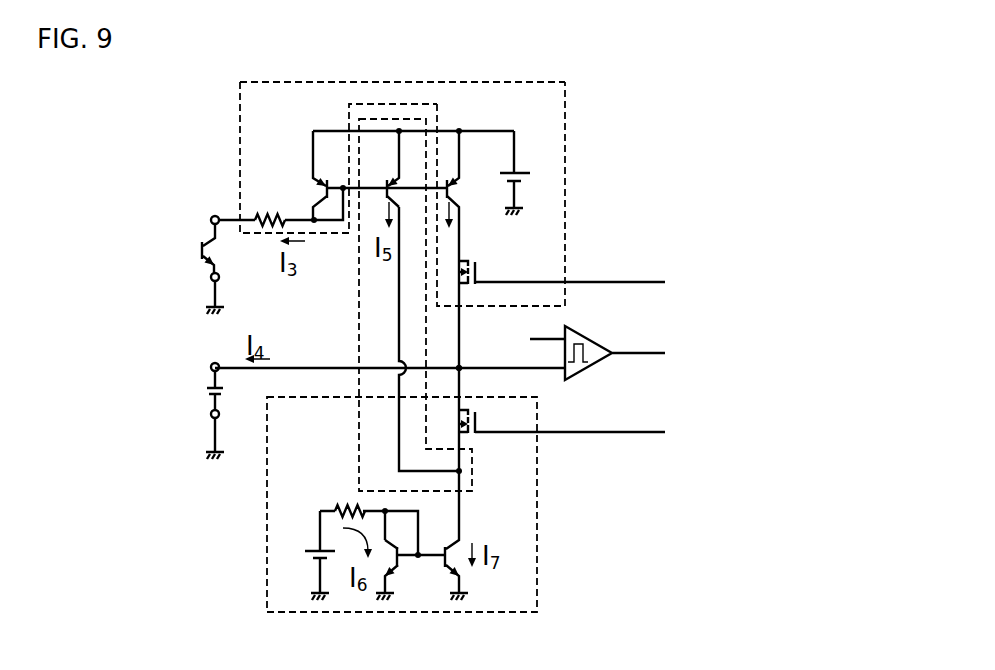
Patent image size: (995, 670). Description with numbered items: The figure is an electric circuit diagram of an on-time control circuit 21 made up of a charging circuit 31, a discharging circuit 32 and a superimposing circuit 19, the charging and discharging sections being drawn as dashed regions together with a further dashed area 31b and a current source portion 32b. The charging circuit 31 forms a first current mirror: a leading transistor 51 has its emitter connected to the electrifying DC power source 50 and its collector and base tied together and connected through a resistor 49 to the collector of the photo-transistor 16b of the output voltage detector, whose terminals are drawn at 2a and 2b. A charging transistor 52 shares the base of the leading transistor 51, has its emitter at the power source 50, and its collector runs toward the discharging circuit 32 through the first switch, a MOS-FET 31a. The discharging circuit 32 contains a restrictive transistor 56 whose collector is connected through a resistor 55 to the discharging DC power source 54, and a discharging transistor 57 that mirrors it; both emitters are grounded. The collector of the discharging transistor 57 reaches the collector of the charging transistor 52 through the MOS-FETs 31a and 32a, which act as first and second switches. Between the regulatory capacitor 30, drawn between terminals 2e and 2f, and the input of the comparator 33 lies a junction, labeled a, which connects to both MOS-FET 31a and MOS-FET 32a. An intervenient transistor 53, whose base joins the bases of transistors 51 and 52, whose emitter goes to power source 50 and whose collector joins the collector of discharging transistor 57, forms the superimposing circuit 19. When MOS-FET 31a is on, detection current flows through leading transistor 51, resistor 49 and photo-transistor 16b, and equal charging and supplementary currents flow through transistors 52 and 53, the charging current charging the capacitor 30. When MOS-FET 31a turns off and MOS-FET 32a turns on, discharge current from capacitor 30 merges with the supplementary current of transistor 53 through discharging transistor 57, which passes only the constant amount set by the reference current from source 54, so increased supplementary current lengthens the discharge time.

The on-time control circuit 21 is at (320, 75).
The charging circuit 31 is at (240, 132).
The current output section 31b is at (506, 122).
The MOS-FET 31a is at (480, 272).
The superimposing circuit 19 is at (358, 320).
The discharging circuit 32 is at (266, 520).
The MOS-FET 32a is at (478, 434).
The current source circuit 32b is at (310, 475).
The resistor 49 is at (265, 216).
The leading transistor 51 is at (325, 186).
The intervenient transistor 53 is at (386, 188).
The charging transistor 52 is at (450, 188).
The electrifying DC power source 50 is at (518, 178).
The comparator 33 is at (597, 336).
The node a is at (462, 366).
The terminal 2a is at (211, 217).
The terminal 2b is at (211, 279).
The terminal 2e is at (211, 364).
The terminal 2f is at (211, 417).
The photo-transistor 16b is at (200, 244).
The regulatory capacitor 30 is at (208, 390).
The discharging DC power source 54 is at (316, 549).
The resistor 55 is at (350, 506).
The restrictive transistor 56 is at (400, 564).
The discharging transistor 57 is at (444, 547).